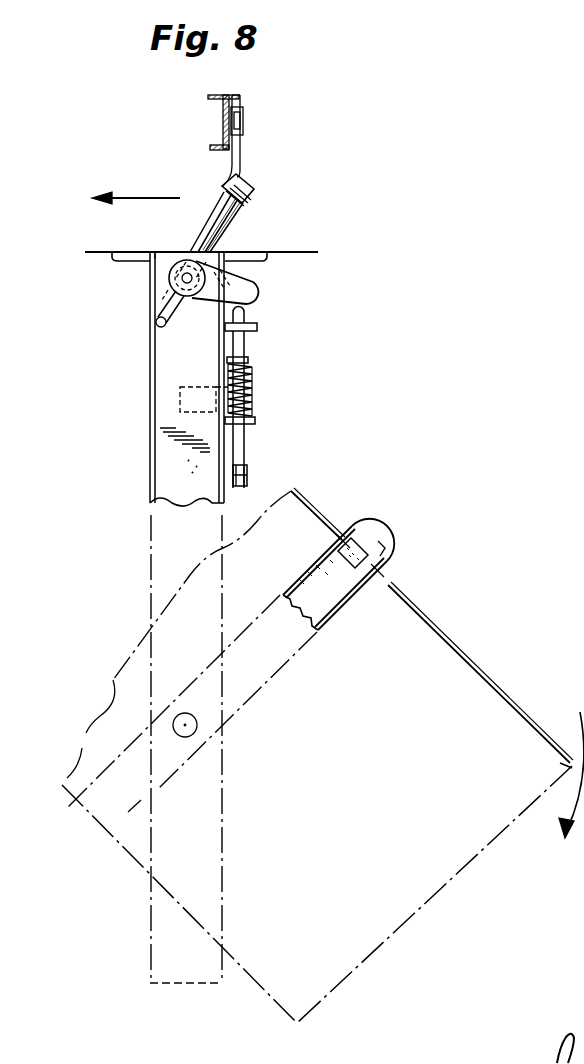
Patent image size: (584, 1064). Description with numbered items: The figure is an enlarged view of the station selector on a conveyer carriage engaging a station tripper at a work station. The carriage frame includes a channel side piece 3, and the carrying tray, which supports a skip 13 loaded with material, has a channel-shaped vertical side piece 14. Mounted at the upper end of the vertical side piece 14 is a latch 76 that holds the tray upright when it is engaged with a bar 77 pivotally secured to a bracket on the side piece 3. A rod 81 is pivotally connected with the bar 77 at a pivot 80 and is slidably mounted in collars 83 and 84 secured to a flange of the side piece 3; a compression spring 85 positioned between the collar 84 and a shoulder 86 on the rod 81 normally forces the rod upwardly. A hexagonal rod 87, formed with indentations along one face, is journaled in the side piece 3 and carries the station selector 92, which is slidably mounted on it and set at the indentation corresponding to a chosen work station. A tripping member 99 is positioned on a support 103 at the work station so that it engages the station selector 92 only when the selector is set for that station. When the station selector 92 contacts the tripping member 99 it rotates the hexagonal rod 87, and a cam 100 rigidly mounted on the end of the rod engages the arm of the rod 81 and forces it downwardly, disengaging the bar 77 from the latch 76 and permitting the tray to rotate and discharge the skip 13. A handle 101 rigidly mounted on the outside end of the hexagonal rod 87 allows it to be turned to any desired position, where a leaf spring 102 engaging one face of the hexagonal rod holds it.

The channel side piece 3 is at (158, 452).
The skip 13 is at (472, 700).
The vertical side piece 14 is at (306, 584).
The latch 76 is at (378, 552).
The bar 77 is at (197, 387).
The pivotal connection 80 is at (249, 472).
The rod 81 is at (245, 348).
The collar 83 is at (258, 327).
The collar 84 is at (258, 421).
The compression spring 85 is at (250, 387).
The shoulder 86 is at (250, 363).
The hexagonal rod 87 is at (170, 279).
The station selector 92 is at (222, 223).
The tripping member 99 is at (241, 153).
The cam 100 is at (243, 293).
The handle 101 is at (166, 311).
The leaf spring 102 is at (146, 250).
The support 103 is at (211, 97).